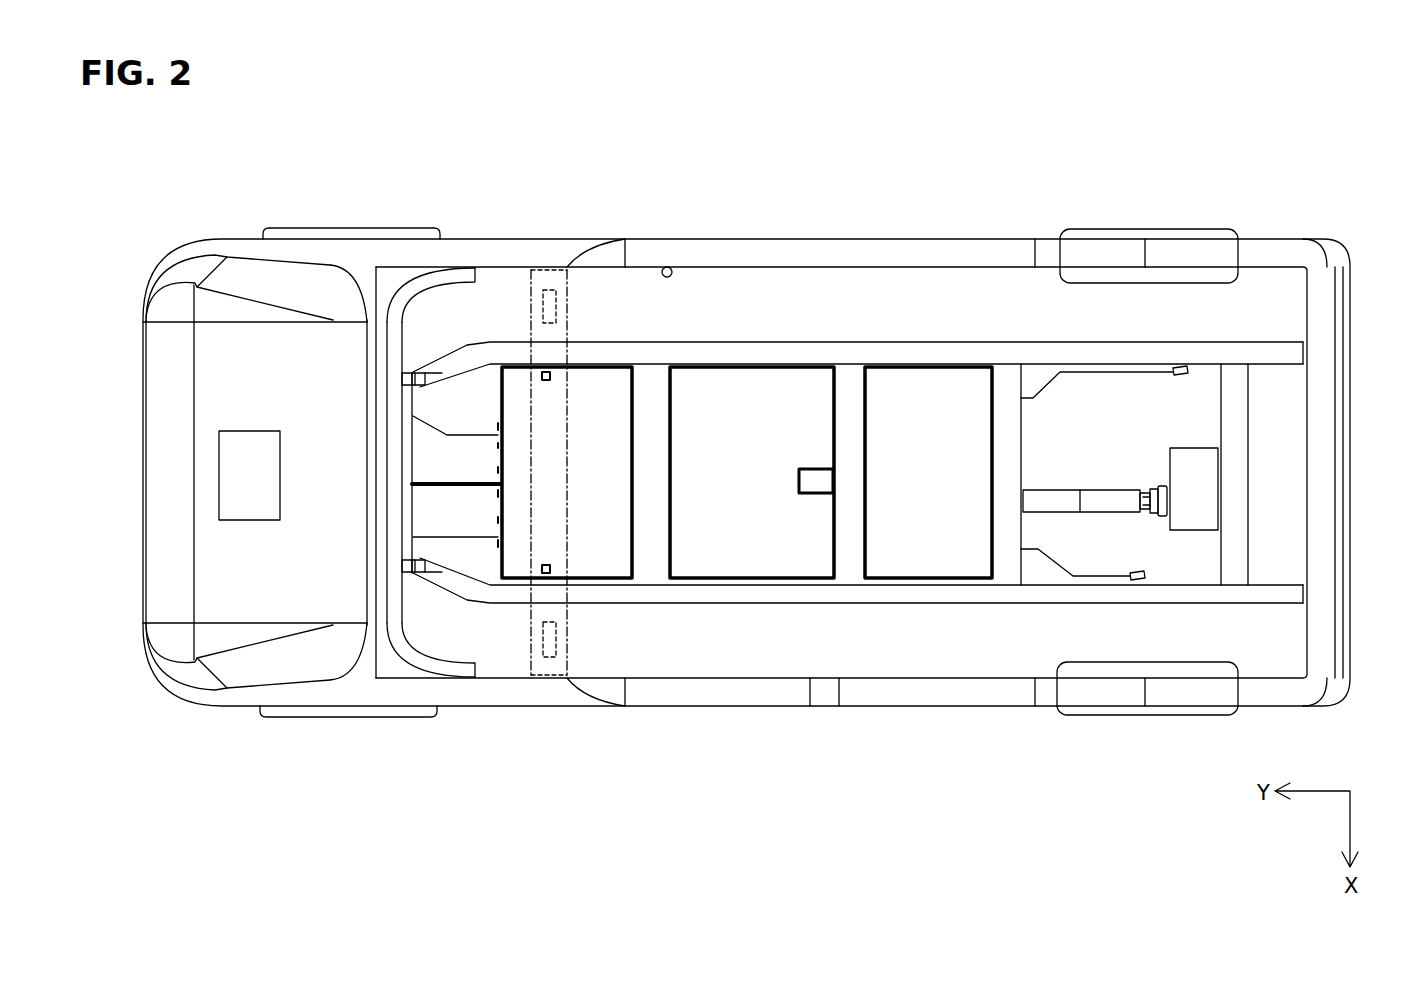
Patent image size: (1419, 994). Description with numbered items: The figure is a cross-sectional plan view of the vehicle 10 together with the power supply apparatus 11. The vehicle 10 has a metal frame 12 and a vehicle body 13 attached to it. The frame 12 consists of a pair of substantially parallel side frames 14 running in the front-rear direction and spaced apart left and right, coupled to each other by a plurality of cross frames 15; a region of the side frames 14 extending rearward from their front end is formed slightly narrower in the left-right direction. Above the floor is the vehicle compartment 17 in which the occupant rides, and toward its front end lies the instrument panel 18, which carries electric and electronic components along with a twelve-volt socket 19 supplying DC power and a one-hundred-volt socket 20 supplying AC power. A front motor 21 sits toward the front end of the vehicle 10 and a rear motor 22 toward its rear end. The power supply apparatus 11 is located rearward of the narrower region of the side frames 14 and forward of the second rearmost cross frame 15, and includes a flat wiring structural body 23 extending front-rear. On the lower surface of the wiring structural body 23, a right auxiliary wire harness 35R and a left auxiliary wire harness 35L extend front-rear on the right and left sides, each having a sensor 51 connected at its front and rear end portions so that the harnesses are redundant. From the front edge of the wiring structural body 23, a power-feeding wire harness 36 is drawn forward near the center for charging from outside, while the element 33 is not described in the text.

The vehicle 10 is at (1346, 219).
The power supply apparatus 11 is at (752, 407).
The frame 12 is at (916, 559).
The vehicle body 13 is at (1258, 252).
The side frame 14 is at (1290, 353).
The cross frame 15 is at (1236, 413).
The vehicle compartment 17 is at (662, 267).
The instrument panel 18 is at (540, 273).
The 12-V socket 19 is at (550, 290).
The 100-V socket 20 is at (548, 657).
The front motor 21 is at (245, 470).
The rear motor 22 is at (1197, 515).
The wiring structural body 23 is at (927, 407).
The power cable 33 is at (1047, 505).
The right auxiliary wire harness 35R is at (477, 430).
The left auxiliary wire harness 35L is at (467, 537).
The power-feeding wire harness 36 is at (433, 487).
The sensor 51 is at (1178, 367).